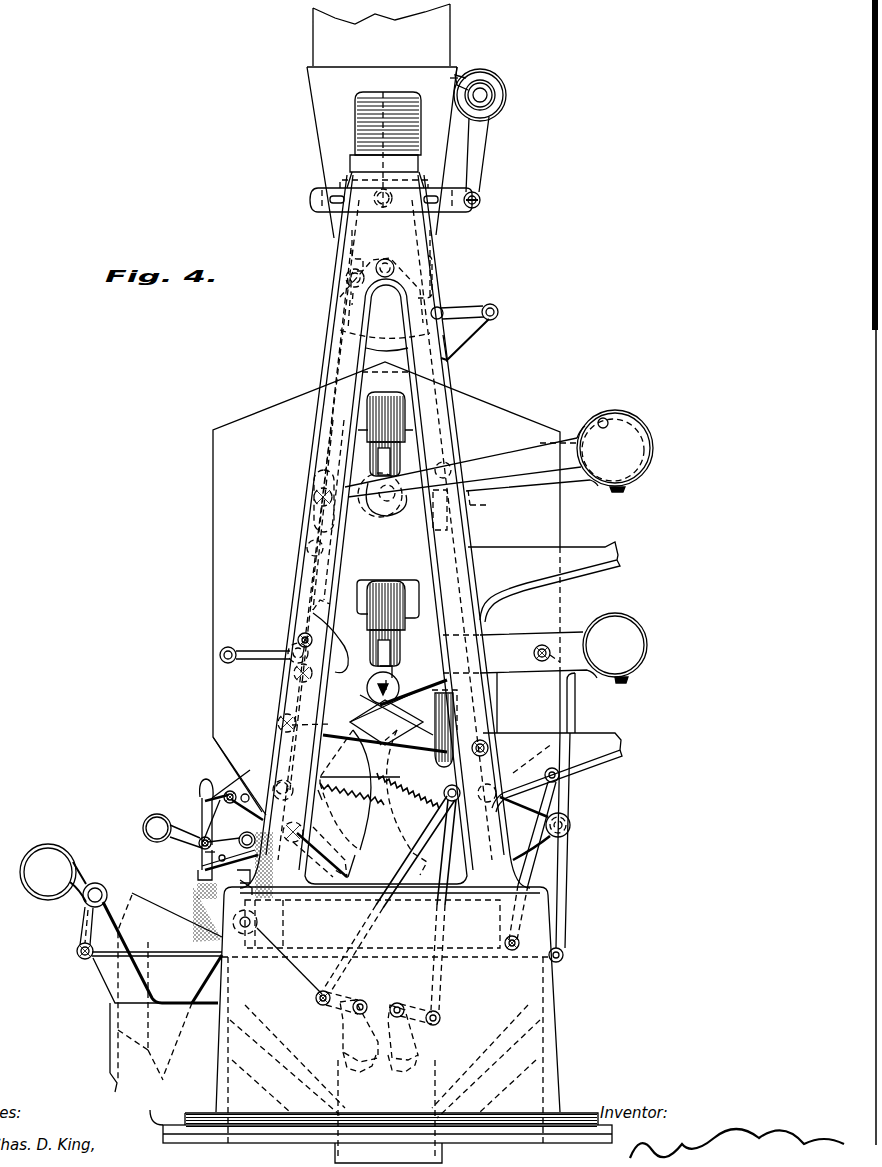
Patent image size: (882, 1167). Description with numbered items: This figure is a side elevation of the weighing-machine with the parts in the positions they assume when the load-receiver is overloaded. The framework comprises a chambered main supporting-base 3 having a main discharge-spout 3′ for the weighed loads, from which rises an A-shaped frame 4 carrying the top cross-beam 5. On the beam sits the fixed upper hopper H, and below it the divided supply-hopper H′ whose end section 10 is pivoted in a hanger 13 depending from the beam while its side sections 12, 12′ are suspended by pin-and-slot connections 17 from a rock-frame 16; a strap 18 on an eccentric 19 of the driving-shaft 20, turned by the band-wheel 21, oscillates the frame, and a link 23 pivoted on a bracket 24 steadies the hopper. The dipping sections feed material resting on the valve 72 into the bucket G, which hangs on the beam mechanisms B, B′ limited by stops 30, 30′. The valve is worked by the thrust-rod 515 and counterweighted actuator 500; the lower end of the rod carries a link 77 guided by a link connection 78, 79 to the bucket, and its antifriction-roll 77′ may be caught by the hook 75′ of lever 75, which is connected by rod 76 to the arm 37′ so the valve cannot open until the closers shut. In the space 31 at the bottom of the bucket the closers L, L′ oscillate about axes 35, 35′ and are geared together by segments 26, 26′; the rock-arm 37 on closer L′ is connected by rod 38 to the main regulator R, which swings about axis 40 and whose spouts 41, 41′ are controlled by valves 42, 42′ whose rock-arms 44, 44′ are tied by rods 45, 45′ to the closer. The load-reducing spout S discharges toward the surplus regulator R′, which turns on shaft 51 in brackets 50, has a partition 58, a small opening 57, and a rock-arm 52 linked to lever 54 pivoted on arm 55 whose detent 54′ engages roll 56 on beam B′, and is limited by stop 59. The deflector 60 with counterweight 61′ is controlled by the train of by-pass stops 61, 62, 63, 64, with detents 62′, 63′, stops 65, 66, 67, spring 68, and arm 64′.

The upper hopper H is at (370, 121).
The top plate or cross-beam 5 is at (385, 95).
The end section 10 is at (340, 214).
The rock-frame 16 is at (310, 198).
The pin-and-slot connection 17 is at (332, 196).
The hanger or bracket 13 is at (392, 190).
The eccentric 19 is at (480, 78).
The band-wheel 21 is at (497, 88).
The driving-shaft 20 is at (490, 96).
The strap 18 is at (480, 149).
The A-shaped frame 4 is at (325, 368).
The side section 12 is at (436, 246).
The thrust-rod 515 is at (332, 418).
The supply-hopper H′ is at (369, 284).
The side section 12′ is at (342, 255).
The valve 72 is at (388, 335).
The link 23 is at (462, 318).
The bracket 24 is at (472, 342).
The bucket G is at (213, 488).
The link 77 is at (318, 583).
The valve-opening actuator or counterweighted lever 500 is at (500, 455).
The beam mechanism B is at (530, 476).
The stop 30 is at (588, 548).
The beam mechanism B′ is at (500, 645).
The antifriction-roll 56 is at (540, 645).
The stop or locking-detent 54′ is at (560, 662).
The stop 30′ is at (592, 738).
The axis 35′ is at (492, 785).
The arm 37′ is at (440, 752).
The rock-arm 37 is at (535, 795).
The arm 55 is at (568, 812).
The link or rod 38 is at (560, 850).
The lever 54 is at (568, 881).
The antifriction-roll 77′ is at (302, 635).
The link connection 78 is at (288, 650).
The link connection 79 is at (255, 660).
The hook 75′ is at (335, 640).
The lever 75 is at (366, 683).
The rod 76 is at (334, 735).
The space 31 is at (391, 717).
The axis 35 is at (288, 782).
The closer L is at (360, 790).
The by-pass 64 is at (328, 792).
The spring 68 is at (352, 799).
The gear-segment 26 is at (372, 820).
The closer L′ is at (402, 791).
The gear-segment 26′ is at (400, 835).
The stop 67 is at (312, 850).
The rod 45 is at (392, 878).
The rod 45′ is at (437, 880).
The by-pass 63 is at (252, 876).
The detent 63′ is at (263, 805).
The stop 66 is at (231, 790).
The by-pass stop 62 is at (227, 789).
The detent 62′ is at (204, 782).
The counterweight 61′ is at (143, 822).
The stream-deflector 60 is at (202, 838).
The load-reducing spout S is at (233, 821).
The by-pass 61 is at (200, 846).
The stop 65 is at (218, 860).
The arm 64′ is at (200, 878).
The shaft 51 is at (97, 893).
The rock-arm 52 is at (84, 912).
The surplus-receiving regulator R′ is at (157, 986).
The bracket 50 is at (105, 962).
The partition 58 is at (150, 978).
The discharge end or opening 57 is at (160, 1040).
The main supporting-base 3 is at (546, 982).
The main discharge-spout 3′ is at (335, 1153).
The axis 40 is at (247, 935).
The stop 59 is at (254, 890).
The main regulator R is at (290, 975).
The rock-arm 44 is at (348, 1000).
The rock-arm 44′ is at (412, 1005).
The discharge-spout 41 is at (340, 1028).
The valve 42 is at (345, 1065).
The discharge-spout 41′ is at (405, 1040).
The valve 42′ is at (408, 1065).